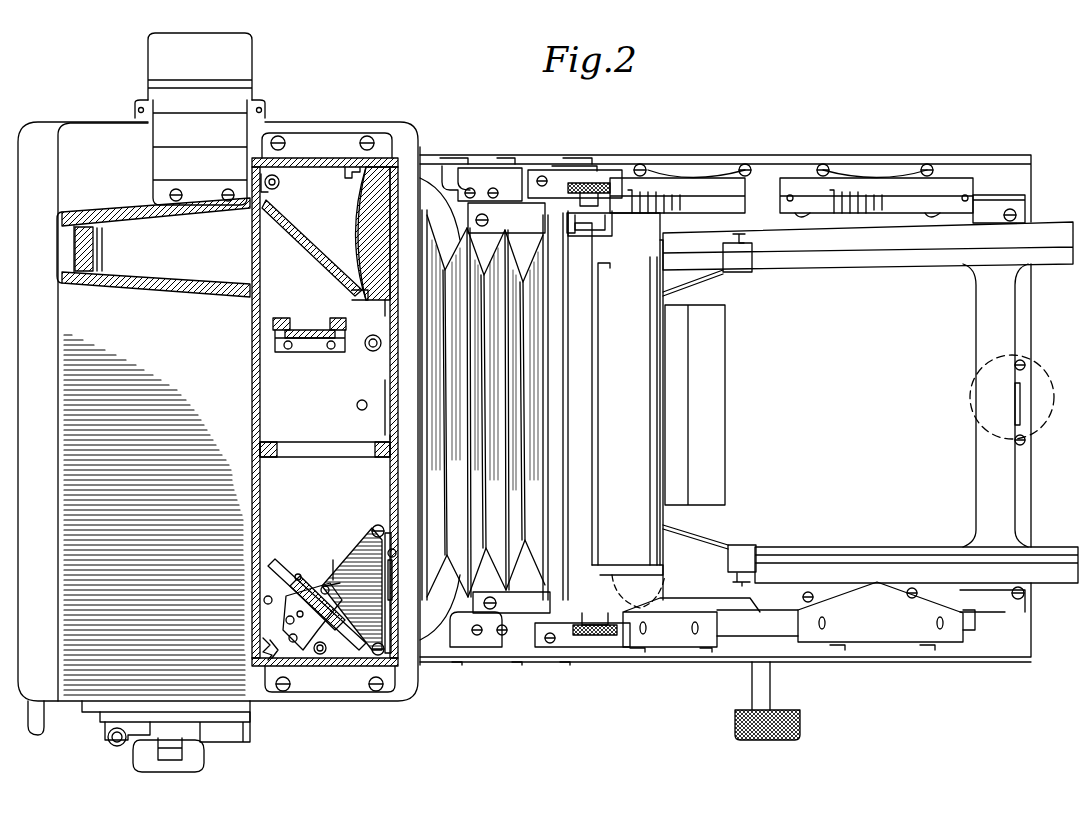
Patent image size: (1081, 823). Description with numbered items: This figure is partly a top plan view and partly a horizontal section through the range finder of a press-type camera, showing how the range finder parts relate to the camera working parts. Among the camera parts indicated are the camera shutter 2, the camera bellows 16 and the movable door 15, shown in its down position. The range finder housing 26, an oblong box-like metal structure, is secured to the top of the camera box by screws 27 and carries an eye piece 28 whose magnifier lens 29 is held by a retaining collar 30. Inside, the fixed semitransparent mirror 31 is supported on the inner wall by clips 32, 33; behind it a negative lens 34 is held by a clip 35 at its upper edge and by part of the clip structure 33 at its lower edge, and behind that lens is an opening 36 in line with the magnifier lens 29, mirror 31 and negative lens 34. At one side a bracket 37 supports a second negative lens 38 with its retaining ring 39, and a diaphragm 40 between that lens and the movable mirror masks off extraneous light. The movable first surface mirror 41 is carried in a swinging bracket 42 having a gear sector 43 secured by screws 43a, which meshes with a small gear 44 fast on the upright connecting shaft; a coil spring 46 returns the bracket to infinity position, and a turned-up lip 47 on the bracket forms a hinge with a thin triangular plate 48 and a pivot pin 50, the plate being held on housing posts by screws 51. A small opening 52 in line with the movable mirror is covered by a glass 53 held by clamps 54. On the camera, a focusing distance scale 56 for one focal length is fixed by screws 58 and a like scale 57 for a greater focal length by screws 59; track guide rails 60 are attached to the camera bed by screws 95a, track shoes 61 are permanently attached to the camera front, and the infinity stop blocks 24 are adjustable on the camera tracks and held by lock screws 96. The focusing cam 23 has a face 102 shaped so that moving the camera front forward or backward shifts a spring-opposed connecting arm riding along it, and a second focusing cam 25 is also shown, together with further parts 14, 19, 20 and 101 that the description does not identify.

The camera shutter 2 is at (716, 336).
The focusing knob 14 is at (735, 722).
The movable door of the camera 15 is at (843, 398).
The camera bellows 16 is at (460, 238).
The tripod socket 19 is at (150, 756).
The bracket 20 is at (250, 738).
The focusing cam 23 is at (675, 647).
The infinity stop blocks 24 is at (748, 270).
The second focusing cam 25 is at (878, 642).
The range finder housing 26 is at (321, 158).
The screws 27 is at (280, 136).
The eye piece 28 is at (106, 218).
The lens 29 is at (97, 243).
The retaining collar 30 is at (104, 262).
The fixed mirror 31 is at (300, 232).
The clip 32 is at (265, 196).
The clip 33 is at (355, 302).
The negative lens 34 is at (380, 198).
The clip 35 is at (350, 178).
The opening 36 is at (420, 165).
The bracket 37 is at (312, 352).
The second negative lens 38 is at (308, 318).
The retaining ring 39 is at (280, 318).
The diaphragm 40 is at (270, 442).
The movable mirror 41 is at (288, 570).
The swinging bracket 42 is at (283, 553).
The gear sector 43 is at (266, 597).
The screws 43a is at (315, 655).
The small gear 44 is at (262, 645).
The coil spring 46 is at (284, 612).
The turned-up lip 47 is at (322, 584).
The triangular plate 48 is at (365, 540).
The pivot pin 50 is at (333, 552).
The screws 51 is at (378, 525).
The small opening 52 is at (396, 610).
The glass 53 is at (385, 582).
The clamps 54 is at (397, 548).
The focusing distance scale 56 is at (690, 178).
The focusing scale 57 is at (878, 178).
The screws 58 is at (640, 164).
The screws 59 is at (823, 164).
The track guide rails 60 is at (990, 195).
The track shoes 61 is at (712, 275).
The screws 95a is at (808, 591).
The lock screws 96 is at (748, 238).
The latch 101 is at (1022, 400).
The face of the cam 102 is at (640, 565).